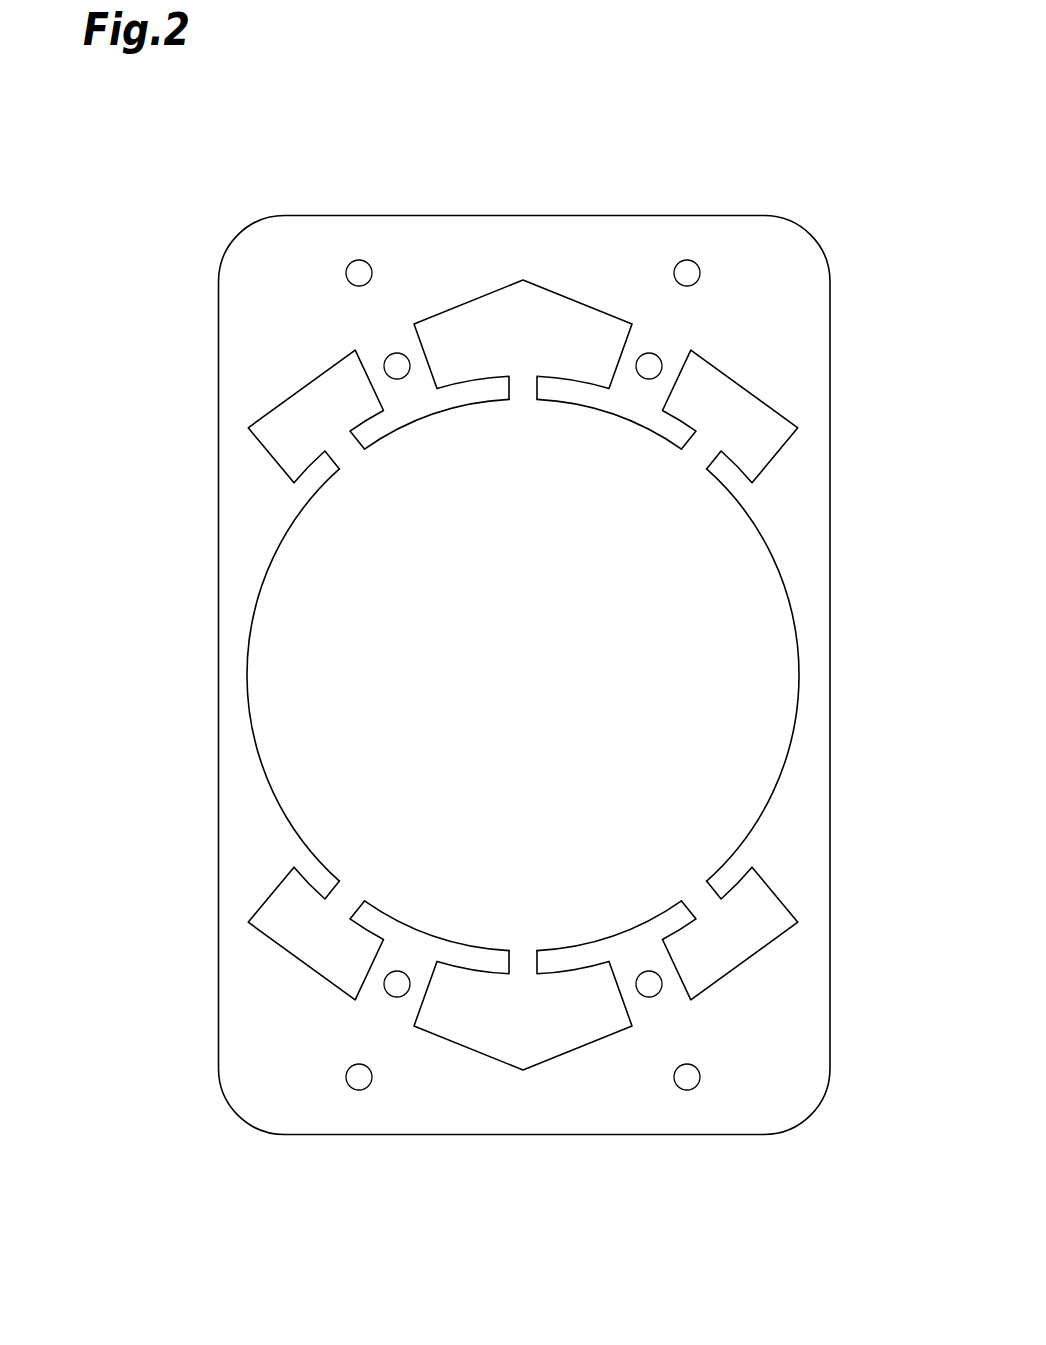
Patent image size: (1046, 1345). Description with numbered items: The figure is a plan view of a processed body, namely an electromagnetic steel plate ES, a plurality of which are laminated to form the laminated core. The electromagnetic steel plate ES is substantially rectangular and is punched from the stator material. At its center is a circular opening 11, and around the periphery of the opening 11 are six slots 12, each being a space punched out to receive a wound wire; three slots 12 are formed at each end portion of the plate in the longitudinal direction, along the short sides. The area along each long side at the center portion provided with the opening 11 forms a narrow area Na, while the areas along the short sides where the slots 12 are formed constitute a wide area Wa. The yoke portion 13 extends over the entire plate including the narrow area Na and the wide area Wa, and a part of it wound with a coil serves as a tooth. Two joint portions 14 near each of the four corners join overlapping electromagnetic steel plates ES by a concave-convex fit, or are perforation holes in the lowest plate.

The opening 11 is at (509, 691).
The slot 12 is at (360, 357).
The yoke portion 13 is at (815, 557).
The joint portion 14 is at (346, 271).
The electromagnetic steel plate ES is at (465, 173).
The wide area Wa is at (377, 235).
The narrow area Na is at (240, 680).